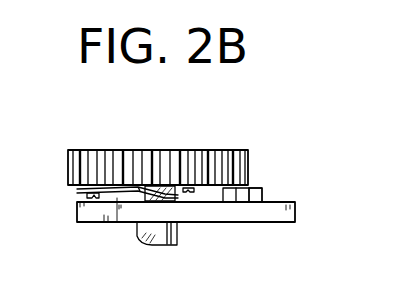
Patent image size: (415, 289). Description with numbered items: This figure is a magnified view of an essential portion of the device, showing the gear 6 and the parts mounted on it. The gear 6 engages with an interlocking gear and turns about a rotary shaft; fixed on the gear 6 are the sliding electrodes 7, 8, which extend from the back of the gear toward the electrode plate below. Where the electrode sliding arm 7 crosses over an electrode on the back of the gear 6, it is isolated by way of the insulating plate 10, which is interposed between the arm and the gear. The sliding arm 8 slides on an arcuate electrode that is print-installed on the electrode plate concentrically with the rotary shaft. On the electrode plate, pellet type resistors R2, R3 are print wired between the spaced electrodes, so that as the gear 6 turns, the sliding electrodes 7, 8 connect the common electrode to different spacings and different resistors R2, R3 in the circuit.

The gear 6 is at (199, 166).
The insulating plate 10 is at (77, 190).
The sliding electrode 7 is at (101, 203).
The sliding electrode 8 is at (117, 199).
The pellet type resistor R2 is at (243, 203).
The pellet type resistor R3 is at (255, 203).